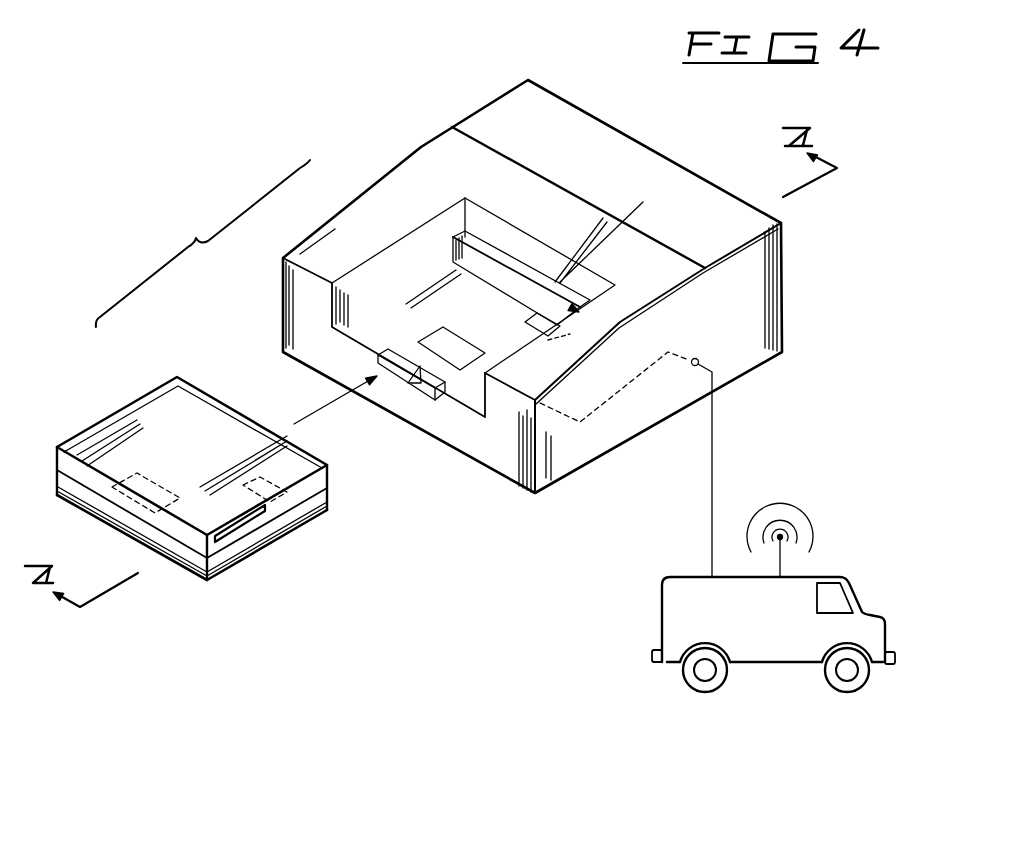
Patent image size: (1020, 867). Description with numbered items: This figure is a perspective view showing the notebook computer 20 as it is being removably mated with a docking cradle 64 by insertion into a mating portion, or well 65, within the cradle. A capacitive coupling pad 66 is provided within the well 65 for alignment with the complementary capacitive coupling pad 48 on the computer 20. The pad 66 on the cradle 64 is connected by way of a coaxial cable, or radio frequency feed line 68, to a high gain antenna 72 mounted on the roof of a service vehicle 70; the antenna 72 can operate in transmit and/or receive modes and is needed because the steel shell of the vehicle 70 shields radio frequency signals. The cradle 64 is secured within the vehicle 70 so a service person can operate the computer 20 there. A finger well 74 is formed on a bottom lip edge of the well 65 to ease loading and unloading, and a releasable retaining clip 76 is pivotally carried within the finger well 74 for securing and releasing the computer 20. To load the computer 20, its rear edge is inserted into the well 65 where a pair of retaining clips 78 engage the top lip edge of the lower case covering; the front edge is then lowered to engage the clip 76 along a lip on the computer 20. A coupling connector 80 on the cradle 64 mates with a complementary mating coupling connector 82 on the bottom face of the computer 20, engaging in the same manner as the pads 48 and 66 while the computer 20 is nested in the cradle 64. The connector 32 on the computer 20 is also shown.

The notebook computer 20 is at (180, 604).
The connector 32 is at (232, 537).
The capacitive coupling pad 48 is at (125, 504).
The mating coupling connector 82 is at (308, 520).
The docking cradle 64 is at (429, 143).
The well 65 is at (406, 264).
The capacitive coupling pad 66 is at (452, 352).
The finger well 74 is at (431, 392).
The releasable retaining clip 76 is at (412, 378).
The retaining clips 78 is at (472, 251).
The coupling connector 80 is at (522, 318).
The radio frequency feed line 68 is at (712, 487).
The service vehicle 70 is at (780, 688).
The high gain antenna 72 is at (788, 565).